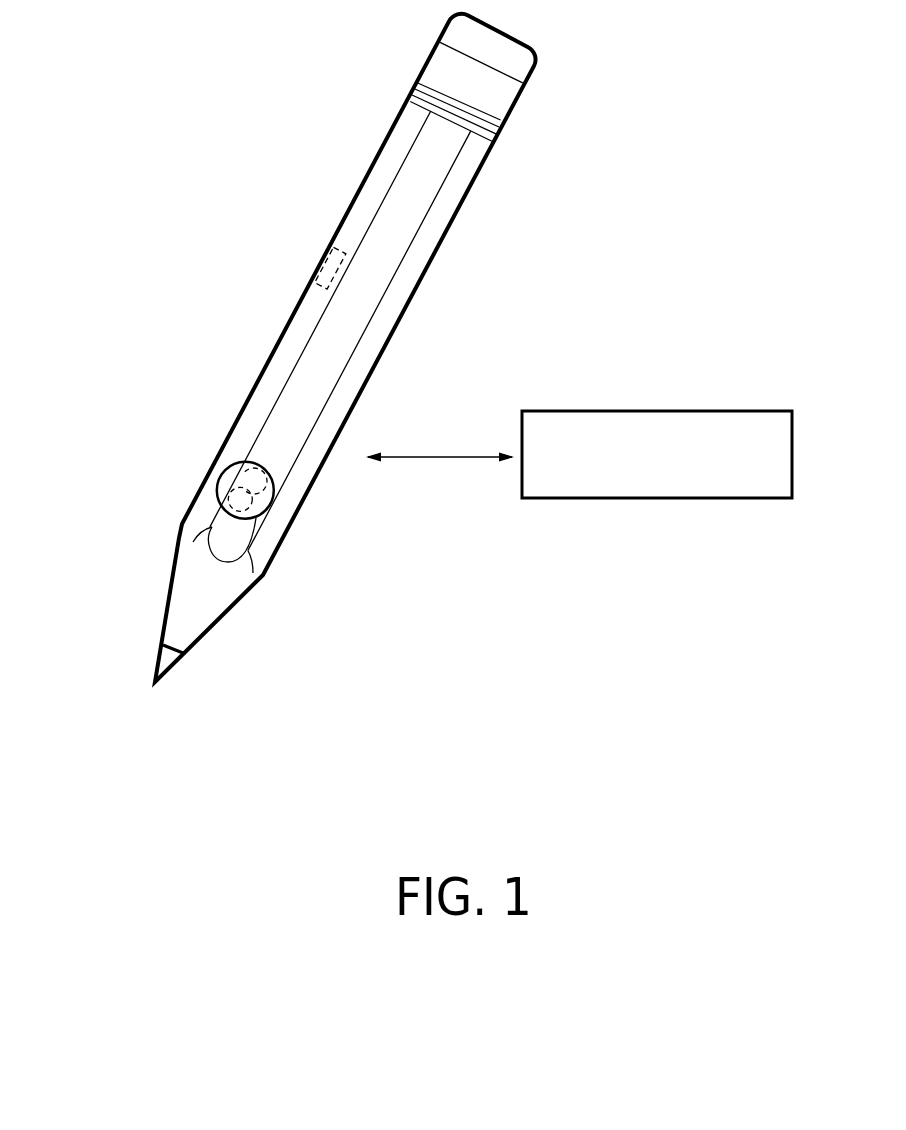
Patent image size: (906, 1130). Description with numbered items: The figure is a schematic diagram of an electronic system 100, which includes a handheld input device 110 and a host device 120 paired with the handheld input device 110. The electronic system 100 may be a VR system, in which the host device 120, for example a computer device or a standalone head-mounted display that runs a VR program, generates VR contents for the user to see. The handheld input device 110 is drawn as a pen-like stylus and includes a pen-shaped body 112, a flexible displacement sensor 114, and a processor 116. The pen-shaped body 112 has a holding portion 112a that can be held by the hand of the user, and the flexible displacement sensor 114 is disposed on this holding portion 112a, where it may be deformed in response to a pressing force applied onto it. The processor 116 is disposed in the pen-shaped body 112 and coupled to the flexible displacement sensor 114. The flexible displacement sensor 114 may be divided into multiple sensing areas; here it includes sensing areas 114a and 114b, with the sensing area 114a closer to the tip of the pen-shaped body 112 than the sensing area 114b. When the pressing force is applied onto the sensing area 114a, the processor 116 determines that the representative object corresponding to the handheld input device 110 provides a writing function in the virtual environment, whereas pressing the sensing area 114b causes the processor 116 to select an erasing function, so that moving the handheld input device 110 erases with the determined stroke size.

The electronic system 100 is at (766, 745).
The handheld input device 110 is at (157, 518).
The pen-shaped body 112 is at (452, 202).
The holding portion 112a is at (372, 356).
The flexible displacement sensor 114 is at (218, 489).
The sensing area 114a is at (273, 512).
The sensing area 114b is at (219, 469).
The processor 116 is at (323, 262).
The host device 120 is at (712, 411).